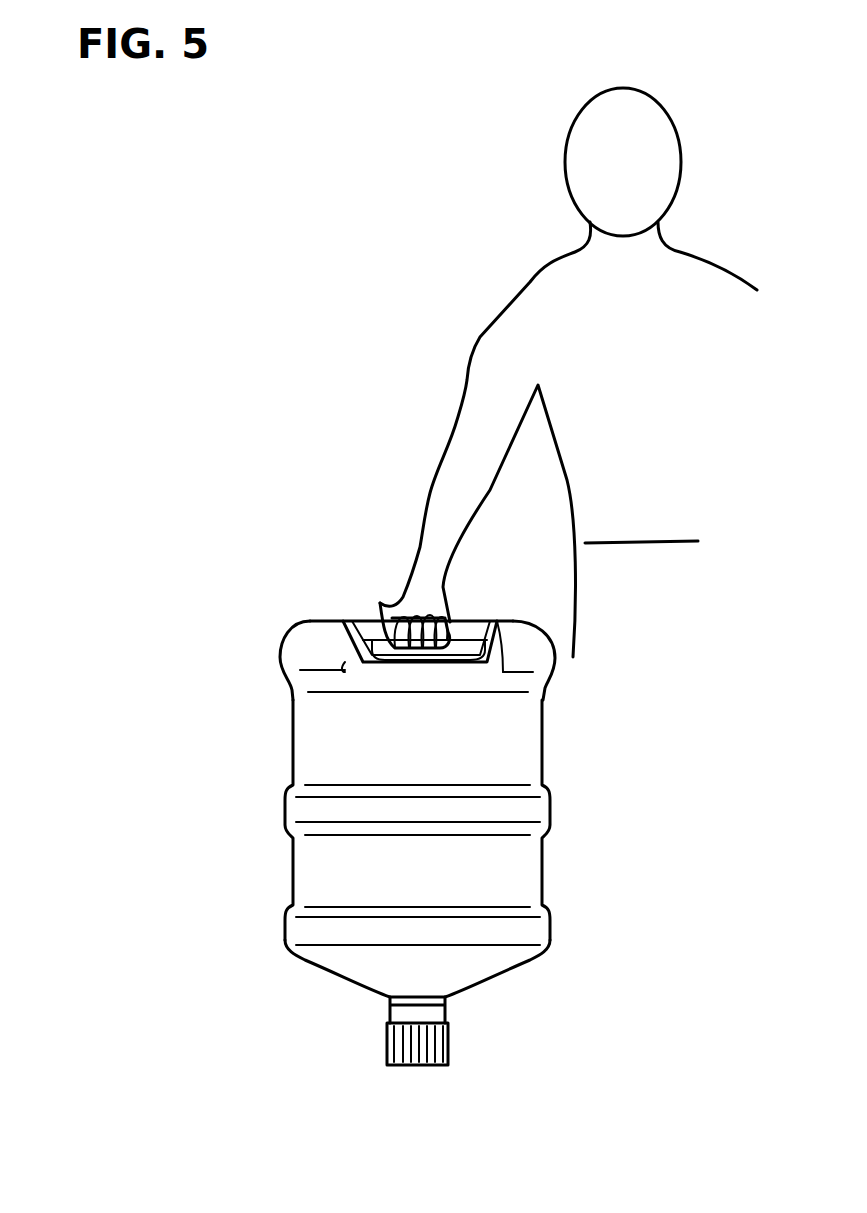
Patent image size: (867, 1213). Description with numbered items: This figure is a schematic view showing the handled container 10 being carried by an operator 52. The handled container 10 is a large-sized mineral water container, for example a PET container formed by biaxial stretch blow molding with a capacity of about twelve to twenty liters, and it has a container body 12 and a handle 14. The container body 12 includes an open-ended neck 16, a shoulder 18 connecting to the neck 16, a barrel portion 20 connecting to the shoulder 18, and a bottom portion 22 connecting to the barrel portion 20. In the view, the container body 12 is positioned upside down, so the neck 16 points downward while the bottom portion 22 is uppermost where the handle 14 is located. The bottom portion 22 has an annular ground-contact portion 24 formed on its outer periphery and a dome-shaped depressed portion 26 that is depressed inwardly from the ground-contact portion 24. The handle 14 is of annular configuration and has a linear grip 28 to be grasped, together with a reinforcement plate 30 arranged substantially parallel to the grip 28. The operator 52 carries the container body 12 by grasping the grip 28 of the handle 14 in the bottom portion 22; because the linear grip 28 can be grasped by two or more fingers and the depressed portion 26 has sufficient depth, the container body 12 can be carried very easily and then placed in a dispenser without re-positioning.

The handled container 10 is at (295, 741).
The container body 12 is at (290, 865).
The handle 14 is at (347, 617).
The neck 16 is at (400, 1015).
The shoulder 18 is at (338, 965).
The barrel portion 20 is at (320, 753).
The bottom portion 22 is at (331, 601).
The ground-contact portion 24 is at (323, 620).
The depressed portion 26 is at (480, 620).
The grip 28 is at (366, 620).
The reinforcement plate 30 is at (417, 668).
The operator 52 is at (542, 312).